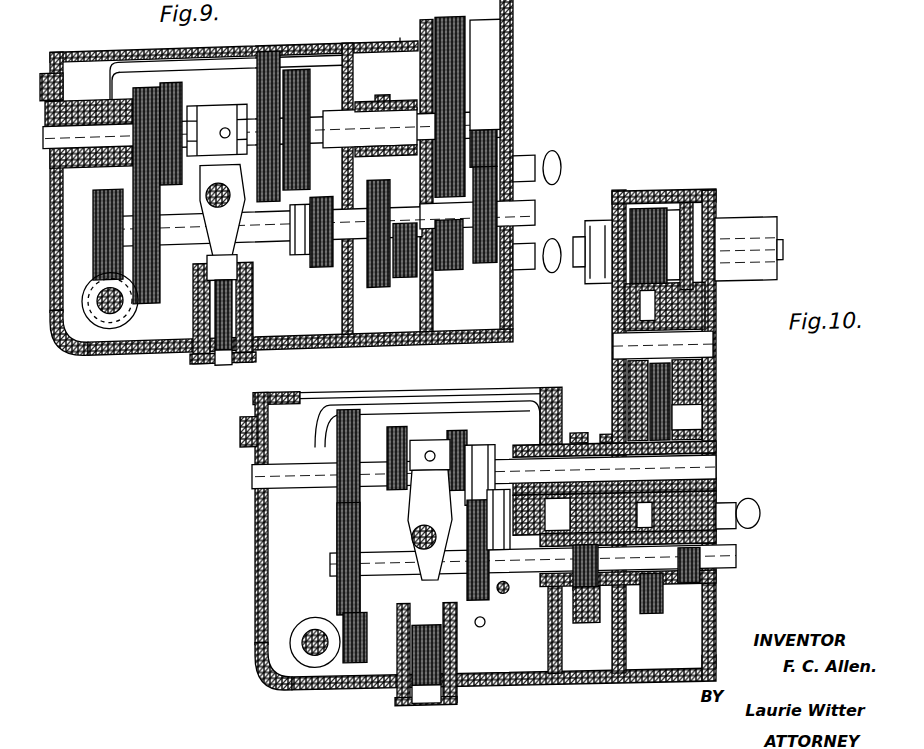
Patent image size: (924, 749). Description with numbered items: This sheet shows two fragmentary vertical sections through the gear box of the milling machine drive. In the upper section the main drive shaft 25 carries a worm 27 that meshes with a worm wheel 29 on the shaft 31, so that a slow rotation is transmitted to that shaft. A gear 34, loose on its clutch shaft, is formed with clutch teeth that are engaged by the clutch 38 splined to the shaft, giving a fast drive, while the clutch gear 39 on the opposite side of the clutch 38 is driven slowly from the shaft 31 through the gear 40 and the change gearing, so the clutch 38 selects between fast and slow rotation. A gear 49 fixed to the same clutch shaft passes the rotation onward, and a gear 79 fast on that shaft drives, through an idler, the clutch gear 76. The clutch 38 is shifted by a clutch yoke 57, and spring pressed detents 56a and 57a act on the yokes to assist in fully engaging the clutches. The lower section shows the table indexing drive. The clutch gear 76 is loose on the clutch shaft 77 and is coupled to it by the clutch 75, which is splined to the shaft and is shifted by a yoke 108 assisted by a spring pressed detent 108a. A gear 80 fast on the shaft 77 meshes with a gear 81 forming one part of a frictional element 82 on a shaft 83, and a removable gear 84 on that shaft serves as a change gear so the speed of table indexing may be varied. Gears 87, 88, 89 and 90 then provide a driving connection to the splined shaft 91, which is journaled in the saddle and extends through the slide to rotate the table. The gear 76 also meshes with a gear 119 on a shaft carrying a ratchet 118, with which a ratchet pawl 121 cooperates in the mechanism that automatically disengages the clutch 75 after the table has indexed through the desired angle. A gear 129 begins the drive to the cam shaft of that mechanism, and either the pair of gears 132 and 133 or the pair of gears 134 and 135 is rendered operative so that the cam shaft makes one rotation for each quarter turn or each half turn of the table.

In FIG. 9, the main drive shaft 25 is at (116, 320).
In FIG. 10, the main drive shaft 25 is at (302, 652).
In FIG. 9, the worm 27 is at (86, 352).
In FIG. 9, the worm wheel 29 is at (100, 195).
In FIG. 9, the shaft 31 is at (280, 257).
In FIG. 9, the gear 34 is at (165, 91).
In FIG. 9, the clutch 38 is at (205, 132).
In FIG. 9, the clutch gear 39 is at (270, 62).
In FIG. 9, the gear 40 is at (322, 278).
In FIG. 9, the gear 49 is at (298, 81).
In FIG. 9, the spring pressed detent 56a is at (400, 50).
In FIG. 9, the clutch yoke 57 is at (202, 210).
In FIG. 9, the spring pressed detent 57a is at (223, 373).
In FIG. 10, the clutch 75 is at (428, 464).
In FIG. 10, the clutch gear 76 is at (345, 417).
In FIG. 10, the clutch shaft 77 is at (252, 481).
In FIG. 9, the gear 79 is at (133, 97).
In FIG. 9, the gear 80 is at (382, 107).
In FIG. 10, the gear 80 is at (578, 445).
In FIG. 9, the gear 81 is at (378, 300).
In FIG. 10, the gear 81 is at (580, 640).
In FIG. 9, the frictional element 82 is at (410, 291).
In FIG. 10, the shaft 83 is at (740, 571).
In FIG. 9, the removable gear 84 is at (490, 280).
In FIG. 10, the removable gear 84 is at (686, 600).
In FIG. 9, the gear 87 is at (450, 286).
In FIG. 10, the gear 87 is at (652, 629).
In FIG. 9, the gear 88 is at (468, 100).
In FIG. 10, the gear 88 is at (680, 444).
In FIG. 9, the gear 89 is at (462, 74).
In FIG. 10, the gear 89 is at (672, 410).
In FIG. 10, the gear 90 is at (645, 226).
In FIG. 10, the splined shaft 91 is at (778, 264).
In FIG. 10, the yoke 108 is at (400, 654).
In FIG. 10, the spring pressed detent 108a is at (428, 714).
In FIG. 10, the ratchet 118 is at (480, 638).
In FIG. 10, the gear 119 is at (337, 563).
In FIG. 10, the ratchet pawl 121 is at (504, 605).
In FIG. 10, the gear 129 is at (520, 610).
In FIG. 10, the gear 132 is at (470, 510).
In FIG. 10, the gear 133 is at (455, 440).
In FIG. 10, the gear 134 is at (404, 538).
In FIG. 10, the gear 135 is at (395, 435).